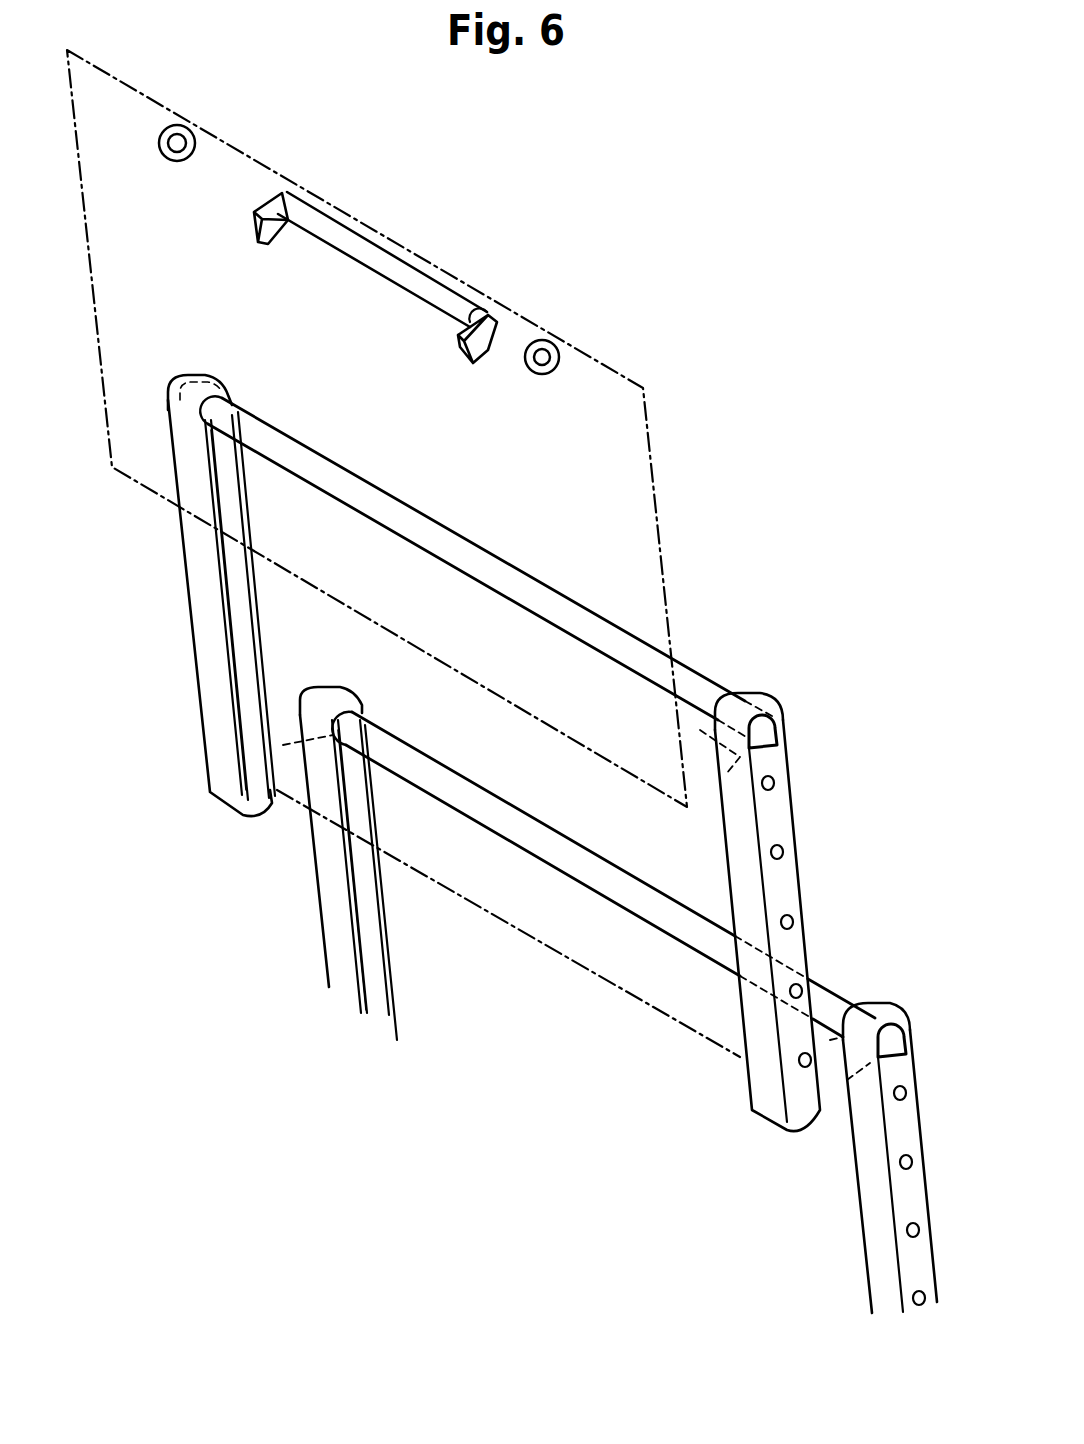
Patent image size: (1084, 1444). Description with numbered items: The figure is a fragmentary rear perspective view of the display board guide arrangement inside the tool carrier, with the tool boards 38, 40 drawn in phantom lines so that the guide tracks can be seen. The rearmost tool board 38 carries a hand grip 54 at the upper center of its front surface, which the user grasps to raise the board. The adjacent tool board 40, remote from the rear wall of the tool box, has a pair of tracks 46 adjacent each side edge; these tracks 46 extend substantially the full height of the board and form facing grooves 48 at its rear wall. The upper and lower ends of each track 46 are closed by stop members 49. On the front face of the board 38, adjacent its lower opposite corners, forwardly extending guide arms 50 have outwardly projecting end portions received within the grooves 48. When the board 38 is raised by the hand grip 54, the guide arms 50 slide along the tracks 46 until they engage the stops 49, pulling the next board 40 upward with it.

The tool board 38 is at (655, 512).
The tool board 40 is at (612, 985).
The track 46 is at (770, 800).
The groove 48 is at (268, 733).
The stop member 49 is at (760, 700).
The guide arm 50 is at (706, 680).
The hand grip 54 is at (388, 258).